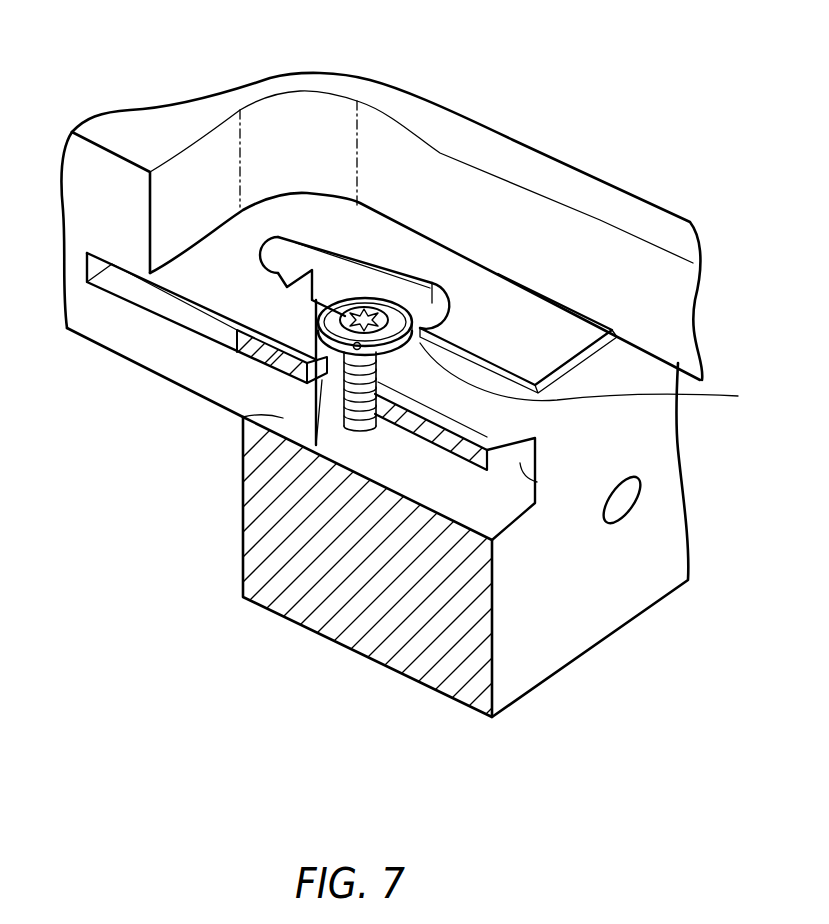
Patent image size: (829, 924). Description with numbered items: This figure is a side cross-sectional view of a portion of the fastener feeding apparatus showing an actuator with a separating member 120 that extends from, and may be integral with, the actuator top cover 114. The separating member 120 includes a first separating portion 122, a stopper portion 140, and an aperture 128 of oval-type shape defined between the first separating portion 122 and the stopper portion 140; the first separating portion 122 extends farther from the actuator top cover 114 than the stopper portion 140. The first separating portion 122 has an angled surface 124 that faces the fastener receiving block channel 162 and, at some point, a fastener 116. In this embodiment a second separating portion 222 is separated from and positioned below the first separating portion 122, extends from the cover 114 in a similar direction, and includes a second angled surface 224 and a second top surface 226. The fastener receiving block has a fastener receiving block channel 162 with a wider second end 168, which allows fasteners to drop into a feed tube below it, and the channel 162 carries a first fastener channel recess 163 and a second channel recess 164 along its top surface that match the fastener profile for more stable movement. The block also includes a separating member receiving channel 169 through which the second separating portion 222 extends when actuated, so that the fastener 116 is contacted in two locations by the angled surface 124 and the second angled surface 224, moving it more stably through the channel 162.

The actuator top cover 114 is at (95, 128).
The aperture 128 is at (296, 220).
The separating member 120 is at (340, 220).
The fastener 116 is at (397, 317).
The second end 168 is at (432, 300).
The stopper portion 140 is at (503, 367).
The first separating portion 122 is at (178, 314).
The angled surface 124 is at (314, 320).
The second separating portion 222 is at (222, 386).
The second top surface 226 is at (280, 387).
The first fastener channel recess 163 is at (250, 488).
The second angled surface 224 is at (277, 527).
The second channel recess 164 is at (462, 455).
The separating member receiving channel 169 is at (537, 483).
The fastener receiving block channel 162 is at (375, 454).